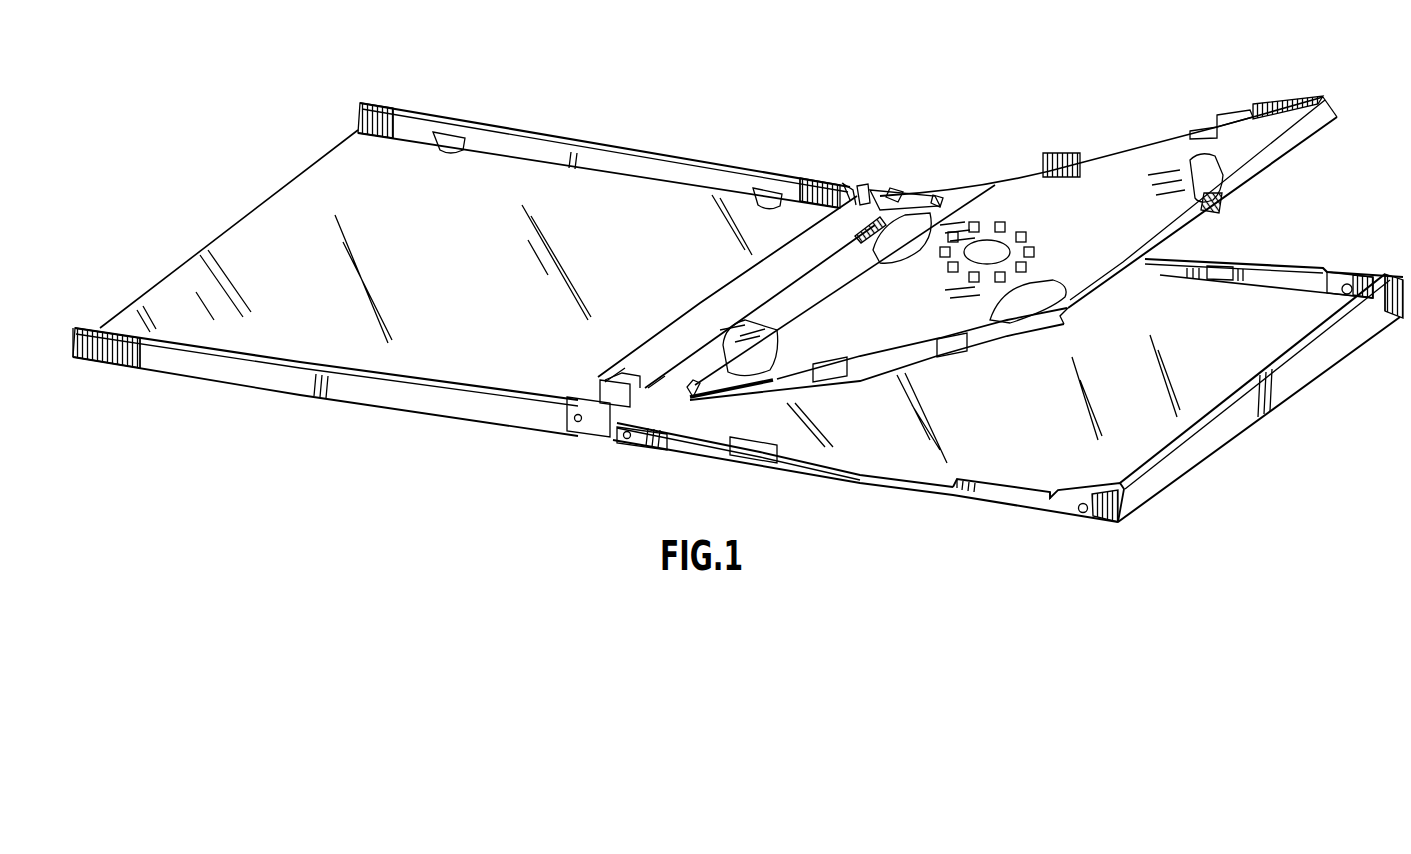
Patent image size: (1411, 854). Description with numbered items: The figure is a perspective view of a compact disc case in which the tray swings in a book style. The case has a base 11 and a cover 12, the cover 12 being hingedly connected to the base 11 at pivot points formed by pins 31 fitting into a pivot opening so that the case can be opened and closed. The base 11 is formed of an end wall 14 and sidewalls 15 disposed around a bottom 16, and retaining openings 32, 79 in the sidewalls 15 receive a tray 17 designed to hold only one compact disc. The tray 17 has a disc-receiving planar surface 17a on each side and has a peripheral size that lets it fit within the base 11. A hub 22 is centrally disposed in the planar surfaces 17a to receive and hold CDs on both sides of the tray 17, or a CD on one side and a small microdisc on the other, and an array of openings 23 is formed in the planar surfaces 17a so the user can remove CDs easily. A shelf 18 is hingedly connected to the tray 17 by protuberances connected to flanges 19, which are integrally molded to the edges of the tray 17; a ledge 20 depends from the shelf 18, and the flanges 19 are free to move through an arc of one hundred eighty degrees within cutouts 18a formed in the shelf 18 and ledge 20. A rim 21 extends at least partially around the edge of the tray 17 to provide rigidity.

The base 11 is at (1008, 384).
The cover 12 is at (673, 152).
The end wall 14 is at (1230, 437).
The sidewalls 15 is at (993, 485).
The bottom 16 is at (893, 453).
The tray 17 is at (1013, 230).
The disc-receiving planar surface 17a is at (1097, 229).
The shelf 18 is at (841, 215).
The cutouts 18a is at (600, 398).
The flanges 19 is at (700, 381).
The ledge 20 is at (772, 294).
The rim 21 is at (1270, 108).
The hub 22 is at (1023, 266).
The array of openings 23 is at (1150, 183).
The pins 31 is at (577, 423).
The retaining opening 32 is at (627, 440).
The retaining opening 79 is at (1080, 513).